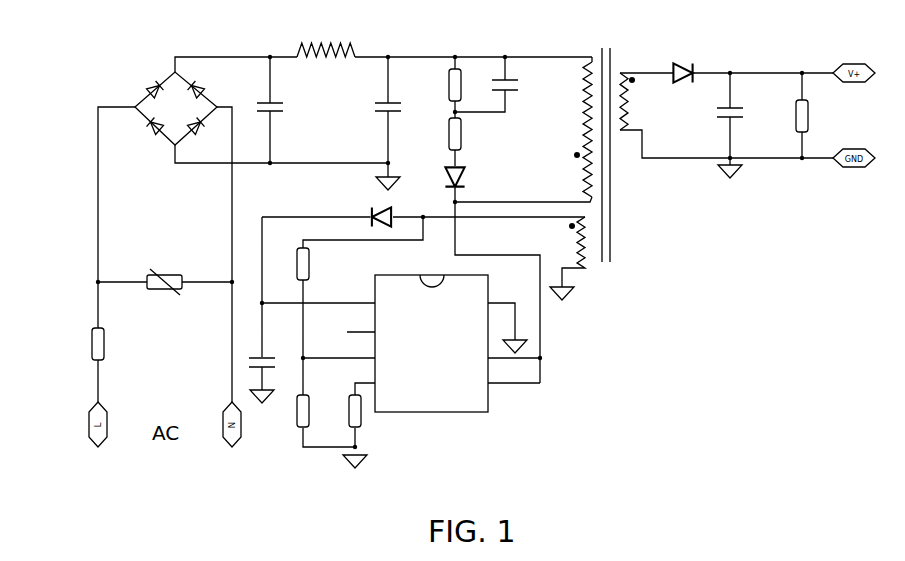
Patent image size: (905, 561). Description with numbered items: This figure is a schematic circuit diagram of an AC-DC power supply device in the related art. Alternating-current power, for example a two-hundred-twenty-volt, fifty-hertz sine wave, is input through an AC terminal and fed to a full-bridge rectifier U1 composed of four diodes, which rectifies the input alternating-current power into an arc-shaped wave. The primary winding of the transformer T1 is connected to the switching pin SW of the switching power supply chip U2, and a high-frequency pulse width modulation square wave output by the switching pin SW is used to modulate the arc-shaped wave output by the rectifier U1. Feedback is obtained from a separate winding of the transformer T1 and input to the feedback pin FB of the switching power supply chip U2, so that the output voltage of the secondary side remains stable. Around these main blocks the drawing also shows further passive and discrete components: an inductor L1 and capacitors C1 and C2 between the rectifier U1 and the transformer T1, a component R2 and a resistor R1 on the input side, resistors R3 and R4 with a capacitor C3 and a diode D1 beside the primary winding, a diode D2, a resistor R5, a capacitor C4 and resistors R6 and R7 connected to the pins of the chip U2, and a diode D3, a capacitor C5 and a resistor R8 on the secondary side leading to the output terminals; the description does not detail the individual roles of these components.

The full-bridge rectifier U1 is at (172, 107).
The inductor L1 is at (326, 41).
The capacitor C1 is at (280, 110).
The capacitor C2 is at (372, 110).
The resistor R3 is at (440, 84).
The resistor R4 is at (440, 137).
The capacitor C3 is at (494, 84).
The diode D1 is at (467, 182).
The diode D2 is at (369, 215).
The transformer T1 is at (640, 174).
The output diode D3 is at (701, 84).
The output capacitor C5 is at (740, 125).
The output resistor R8 is at (811, 115).
The varistor R2 is at (164, 277).
The resistor R1 is at (86, 344).
The resistor R5 is at (313, 264).
The capacitor C4 is at (265, 373).
The resistor R6 is at (290, 411).
The resistor R7 is at (367, 415).
The switching power supply chip U2 is at (451, 355).